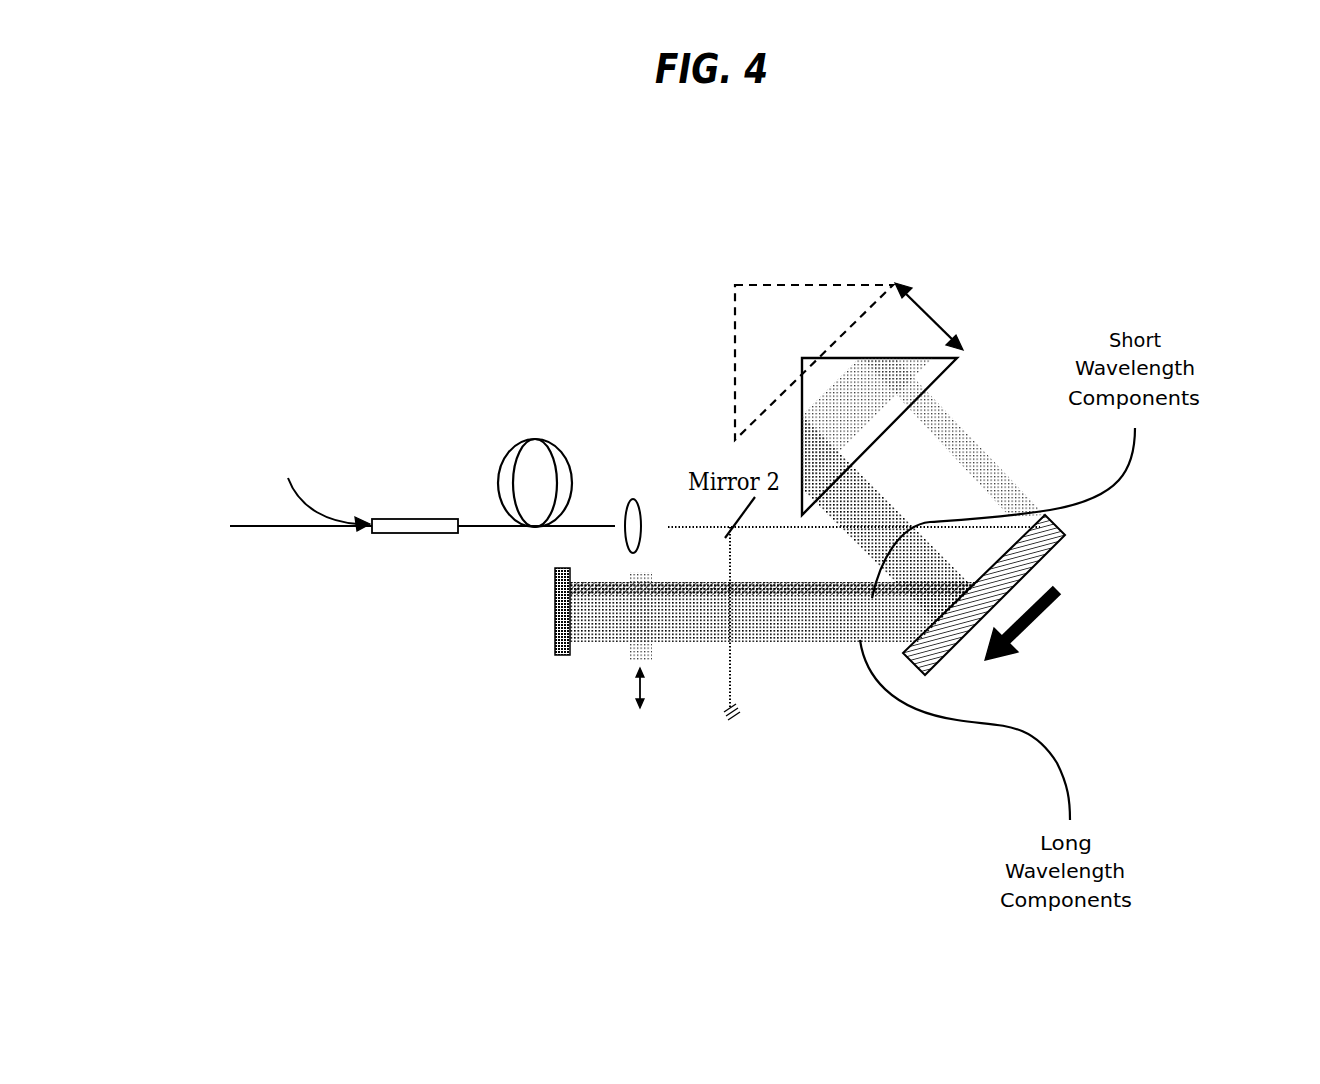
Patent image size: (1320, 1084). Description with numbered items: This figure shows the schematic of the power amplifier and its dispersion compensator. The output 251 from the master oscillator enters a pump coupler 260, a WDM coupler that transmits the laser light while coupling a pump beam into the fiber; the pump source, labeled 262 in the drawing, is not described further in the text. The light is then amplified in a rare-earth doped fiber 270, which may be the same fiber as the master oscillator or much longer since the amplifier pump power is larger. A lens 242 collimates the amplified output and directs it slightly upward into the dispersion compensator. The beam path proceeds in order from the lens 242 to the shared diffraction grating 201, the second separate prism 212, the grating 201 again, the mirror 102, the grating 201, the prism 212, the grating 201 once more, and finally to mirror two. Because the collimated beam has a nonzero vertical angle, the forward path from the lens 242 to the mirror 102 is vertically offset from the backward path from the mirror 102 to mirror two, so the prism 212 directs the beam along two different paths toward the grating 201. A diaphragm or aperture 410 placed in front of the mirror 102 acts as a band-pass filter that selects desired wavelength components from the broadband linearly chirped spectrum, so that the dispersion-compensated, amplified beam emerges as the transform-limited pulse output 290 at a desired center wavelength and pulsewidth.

The laser output from coupler 251 is at (253, 569).
The pump 262 is at (309, 465).
The pump coupler 260 is at (413, 564).
The rare-earth doped fiber 270 is at (533, 451).
The lens 242 is at (635, 499).
The second separate prism 212 is at (886, 453).
The shared diffraction grating 201 is at (1094, 591).
The second reflector 102 is at (501, 611).
The diaphragm or aperture 410 is at (546, 677).
The laser output 290 is at (862, 655).